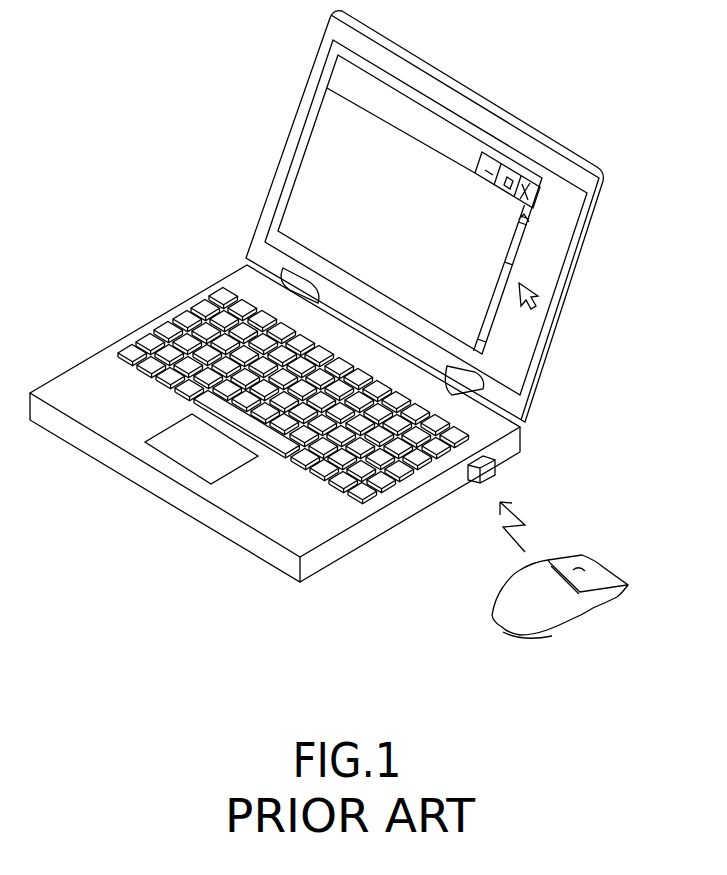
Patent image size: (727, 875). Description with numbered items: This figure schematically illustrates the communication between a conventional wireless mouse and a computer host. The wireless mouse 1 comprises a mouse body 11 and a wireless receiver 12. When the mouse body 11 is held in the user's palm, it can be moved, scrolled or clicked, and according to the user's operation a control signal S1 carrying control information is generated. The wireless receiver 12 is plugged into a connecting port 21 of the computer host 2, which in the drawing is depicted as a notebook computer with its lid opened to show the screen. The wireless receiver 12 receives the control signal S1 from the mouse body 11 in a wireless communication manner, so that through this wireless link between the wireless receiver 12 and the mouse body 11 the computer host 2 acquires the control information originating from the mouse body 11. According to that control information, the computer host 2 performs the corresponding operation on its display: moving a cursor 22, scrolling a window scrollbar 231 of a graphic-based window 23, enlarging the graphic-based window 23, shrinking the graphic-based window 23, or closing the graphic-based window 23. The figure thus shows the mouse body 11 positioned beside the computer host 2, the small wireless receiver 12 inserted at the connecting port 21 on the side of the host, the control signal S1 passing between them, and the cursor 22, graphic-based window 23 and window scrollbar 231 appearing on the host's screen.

The wireless mouse 1 is at (582, 593).
The mouse body 11 is at (542, 620).
The wireless receiver 12 is at (493, 468).
The computer host 2 is at (341, 296).
The connecting port 21 is at (468, 476).
The cursor 22 is at (527, 282).
The graphic-based window 23 is at (465, 204).
The window scrollbar 231 is at (513, 250).
The control signal S1 is at (502, 535).